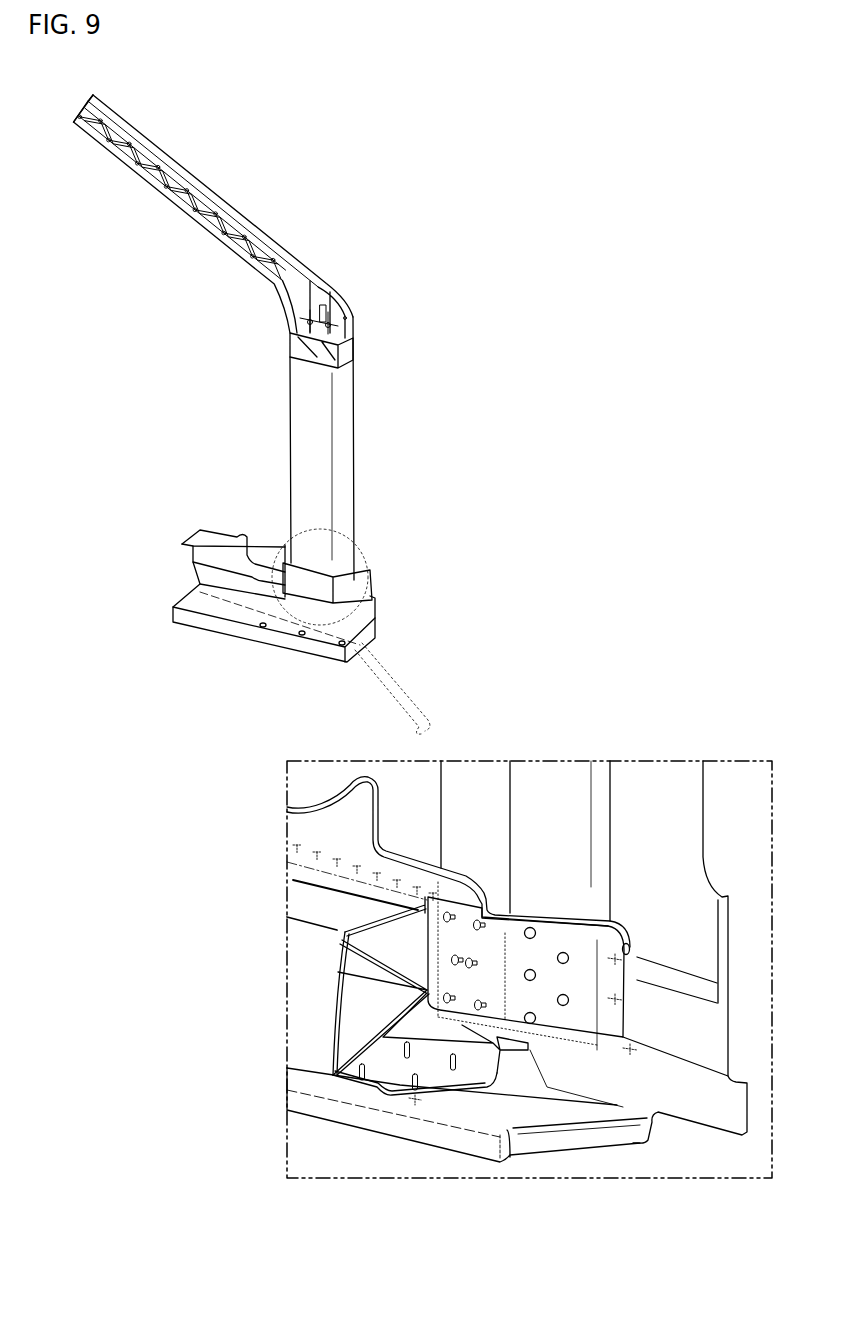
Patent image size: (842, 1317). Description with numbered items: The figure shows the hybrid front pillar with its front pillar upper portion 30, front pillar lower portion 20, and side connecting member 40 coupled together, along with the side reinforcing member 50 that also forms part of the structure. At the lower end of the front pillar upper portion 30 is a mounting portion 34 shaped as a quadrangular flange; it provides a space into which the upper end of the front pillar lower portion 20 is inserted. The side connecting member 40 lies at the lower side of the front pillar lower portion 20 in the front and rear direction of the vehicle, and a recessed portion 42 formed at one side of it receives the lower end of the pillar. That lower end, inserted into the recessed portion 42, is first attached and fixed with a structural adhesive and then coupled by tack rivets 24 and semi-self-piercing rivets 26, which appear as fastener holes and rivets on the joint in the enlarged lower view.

The front pillar lower portion 20 is at (344, 458).
The tack rivets 24 is at (532, 1024).
The semi-self-piercing rivets 26 is at (566, 1005).
The front pillar upper portion 30 is at (215, 196).
The mounting portion 34 is at (343, 347).
The side connecting member 40 is at (220, 612).
The recessed portion 42 is at (320, 593).
The side reinforcing member 50 is at (300, 971).